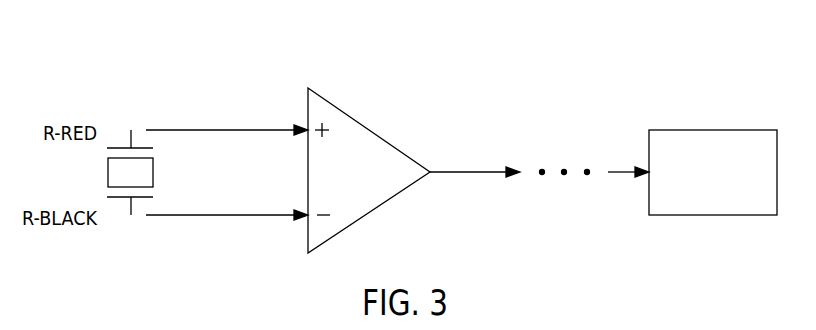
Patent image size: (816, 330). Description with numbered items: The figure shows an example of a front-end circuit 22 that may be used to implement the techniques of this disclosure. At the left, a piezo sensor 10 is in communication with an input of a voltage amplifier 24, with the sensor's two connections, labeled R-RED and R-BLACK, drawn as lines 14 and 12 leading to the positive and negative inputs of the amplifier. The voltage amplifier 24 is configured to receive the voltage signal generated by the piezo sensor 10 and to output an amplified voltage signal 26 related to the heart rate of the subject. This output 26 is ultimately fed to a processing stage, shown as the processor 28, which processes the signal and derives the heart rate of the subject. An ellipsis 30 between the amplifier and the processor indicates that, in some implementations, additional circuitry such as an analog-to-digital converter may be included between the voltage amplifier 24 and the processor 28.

The piezo sensor 10 is at (108, 168).
The R-BLACK input line 12 is at (228, 215).
The R-RED input line 14 is at (232, 130).
The front-end circuit 22 is at (700, 43).
The voltage amplifier 24 is at (372, 128).
The amplified voltage signal 26 is at (463, 170).
The processor 28 is at (713, 130).
The ellipsis 30 is at (565, 160).